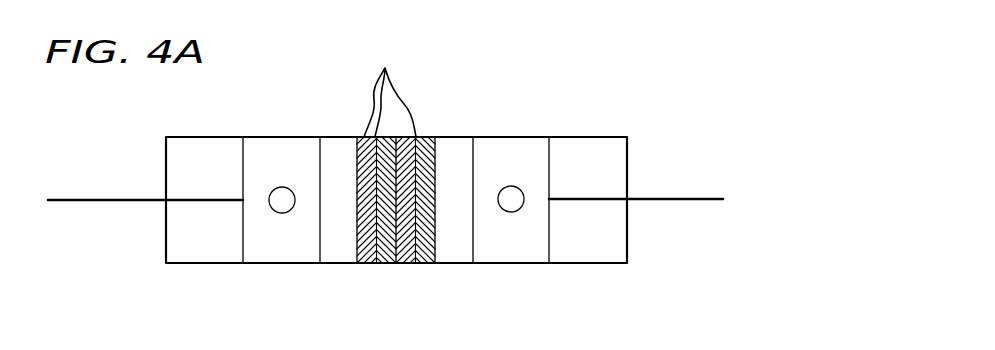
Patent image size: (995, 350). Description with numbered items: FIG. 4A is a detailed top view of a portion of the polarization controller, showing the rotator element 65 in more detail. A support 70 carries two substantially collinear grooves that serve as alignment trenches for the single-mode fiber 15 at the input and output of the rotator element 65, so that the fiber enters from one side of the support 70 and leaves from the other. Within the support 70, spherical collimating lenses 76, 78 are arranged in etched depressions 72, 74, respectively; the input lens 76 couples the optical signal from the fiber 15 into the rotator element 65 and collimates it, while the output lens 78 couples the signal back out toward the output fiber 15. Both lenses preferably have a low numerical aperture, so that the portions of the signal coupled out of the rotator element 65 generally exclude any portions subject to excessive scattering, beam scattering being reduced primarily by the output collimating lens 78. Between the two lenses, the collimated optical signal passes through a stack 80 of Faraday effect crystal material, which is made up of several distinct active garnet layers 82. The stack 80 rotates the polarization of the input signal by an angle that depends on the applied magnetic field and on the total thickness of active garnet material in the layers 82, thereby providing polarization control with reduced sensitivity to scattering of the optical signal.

The single-mode fiber 15 is at (88, 198).
The rotator element 65 is at (638, 69).
The support 70 is at (166, 236).
The etched depression 72 is at (276, 137).
The etched depression 74 is at (503, 137).
The spherical collimating lens 76 is at (283, 213).
The spherical collimating lens 78 is at (513, 212).
The stack 80 is at (357, 267).
The active garnet layers 82 is at (390, 86).